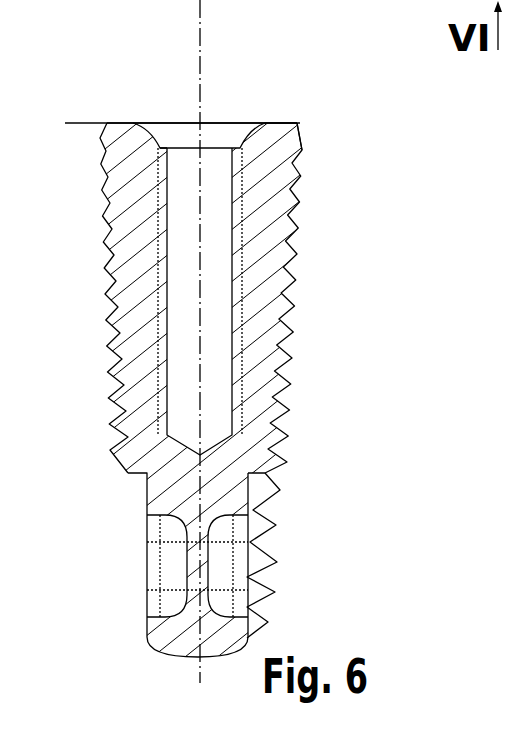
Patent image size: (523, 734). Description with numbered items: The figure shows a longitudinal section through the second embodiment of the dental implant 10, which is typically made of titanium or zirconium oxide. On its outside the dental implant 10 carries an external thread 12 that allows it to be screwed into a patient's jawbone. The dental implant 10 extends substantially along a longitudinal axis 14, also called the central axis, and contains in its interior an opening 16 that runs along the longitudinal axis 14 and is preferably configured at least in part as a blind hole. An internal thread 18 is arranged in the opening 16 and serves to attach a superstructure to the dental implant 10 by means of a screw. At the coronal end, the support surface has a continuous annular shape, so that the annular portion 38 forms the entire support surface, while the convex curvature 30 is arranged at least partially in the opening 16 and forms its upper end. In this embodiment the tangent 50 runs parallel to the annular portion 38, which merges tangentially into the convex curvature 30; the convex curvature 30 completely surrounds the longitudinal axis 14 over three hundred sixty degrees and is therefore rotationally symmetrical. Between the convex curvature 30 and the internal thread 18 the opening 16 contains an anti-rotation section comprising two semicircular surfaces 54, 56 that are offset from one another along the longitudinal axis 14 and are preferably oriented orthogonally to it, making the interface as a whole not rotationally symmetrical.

The dental implant 10 is at (355, 190).
The external thread 12 is at (285, 320).
The longitudinal axis 14 is at (200, 12).
The opening 16 is at (230, 247).
The internal thread 18 is at (163, 340).
The convex curvature 30 is at (263, 126).
The annular portion 38 is at (292, 126).
The tangent 50 is at (78, 123).
The semicircular surface 54 is at (162, 149).
The semicircular surface 56 is at (247, 130).